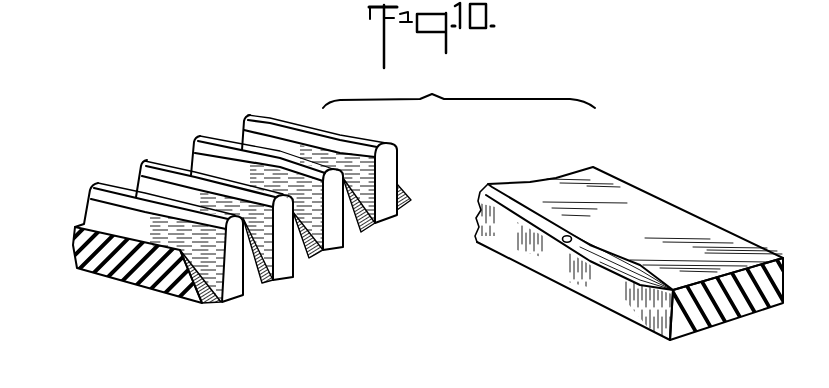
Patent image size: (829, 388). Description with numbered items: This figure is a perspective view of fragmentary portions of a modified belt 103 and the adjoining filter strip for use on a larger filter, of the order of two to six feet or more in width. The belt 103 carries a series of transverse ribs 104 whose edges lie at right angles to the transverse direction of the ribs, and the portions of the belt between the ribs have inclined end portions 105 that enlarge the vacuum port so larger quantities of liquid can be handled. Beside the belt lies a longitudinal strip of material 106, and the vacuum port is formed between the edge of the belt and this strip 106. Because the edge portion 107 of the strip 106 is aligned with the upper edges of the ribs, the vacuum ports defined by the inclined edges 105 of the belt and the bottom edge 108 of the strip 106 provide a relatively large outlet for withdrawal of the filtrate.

The belt 103 is at (234, 234).
The transverse ribs 104 is at (367, 134).
The inclined end portions 105 is at (260, 283).
The longitudinal strip of material 106 is at (636, 271).
The edge portion 107 is at (563, 241).
The bottom edge 108 is at (563, 292).